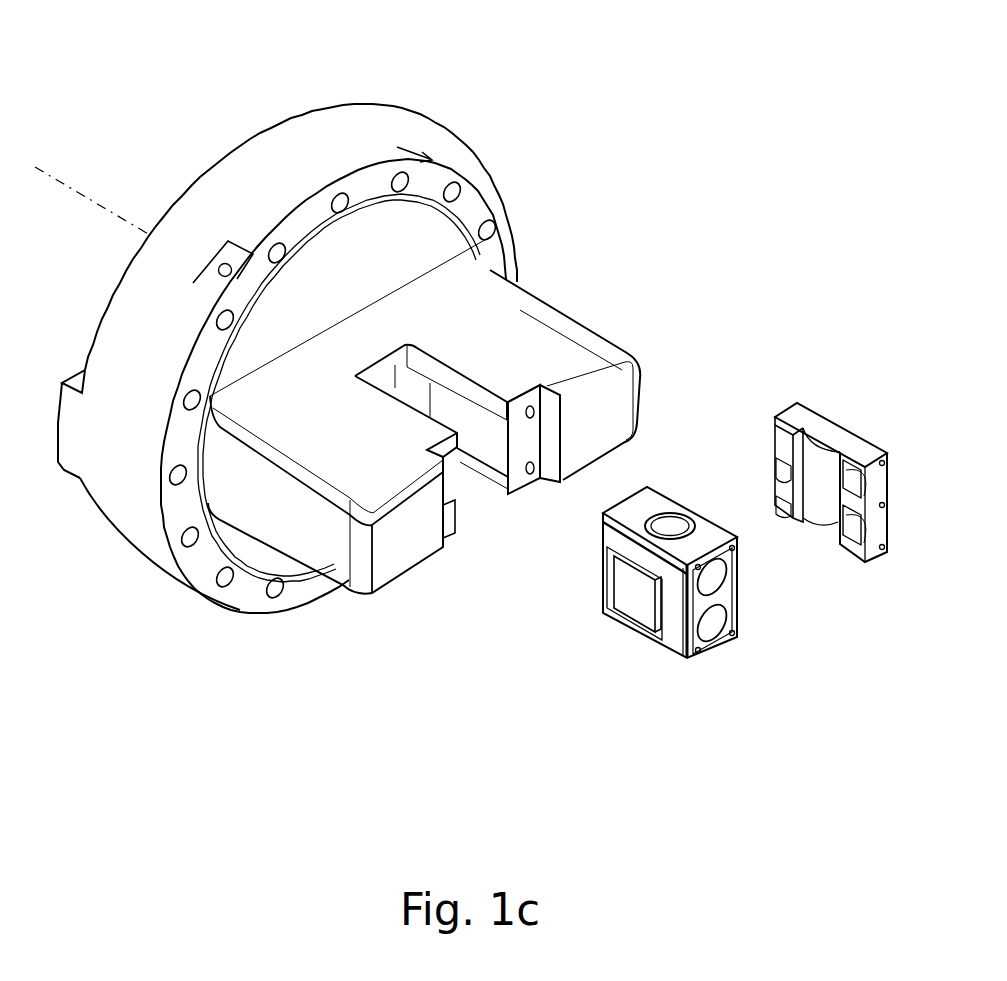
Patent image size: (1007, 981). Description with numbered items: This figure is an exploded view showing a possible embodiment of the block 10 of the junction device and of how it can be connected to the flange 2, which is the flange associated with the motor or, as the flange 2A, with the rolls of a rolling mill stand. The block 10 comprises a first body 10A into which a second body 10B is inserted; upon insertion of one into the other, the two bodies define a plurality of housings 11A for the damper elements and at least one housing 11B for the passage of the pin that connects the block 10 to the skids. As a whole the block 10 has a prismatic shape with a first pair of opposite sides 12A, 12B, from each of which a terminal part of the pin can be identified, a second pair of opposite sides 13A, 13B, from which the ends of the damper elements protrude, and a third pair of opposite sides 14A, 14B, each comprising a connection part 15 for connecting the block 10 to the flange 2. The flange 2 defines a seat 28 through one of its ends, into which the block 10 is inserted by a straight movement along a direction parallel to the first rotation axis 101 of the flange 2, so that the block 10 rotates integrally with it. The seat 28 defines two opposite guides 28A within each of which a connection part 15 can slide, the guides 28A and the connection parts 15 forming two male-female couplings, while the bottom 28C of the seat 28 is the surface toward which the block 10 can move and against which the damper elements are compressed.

The flange 2 is at (382, 105).
The flange 2A is at (397, 545).
The seat 28 is at (463, 489).
The guides 28A is at (454, 486).
The bottom of the seat 28C is at (381, 378).
The first rotation axis 101 is at (83, 186).
The block 10 is at (897, 783).
The first body 10A is at (828, 456).
The second body 10B is at (674, 595).
The housings 11A is at (790, 457).
The housing 11B is at (810, 502).
The side of first pair of opposite sides 12A is at (723, 650).
The side of first pair of opposite sides 12B is at (800, 417).
The side of second pair of opposite sides 13A is at (741, 598).
The side of second pair of opposite sides 13B is at (597, 534).
The side of third pair of opposite sides 14A is at (860, 430).
The side of third pair of opposite sides 14B is at (675, 633).
The connection part 15 is at (635, 599).